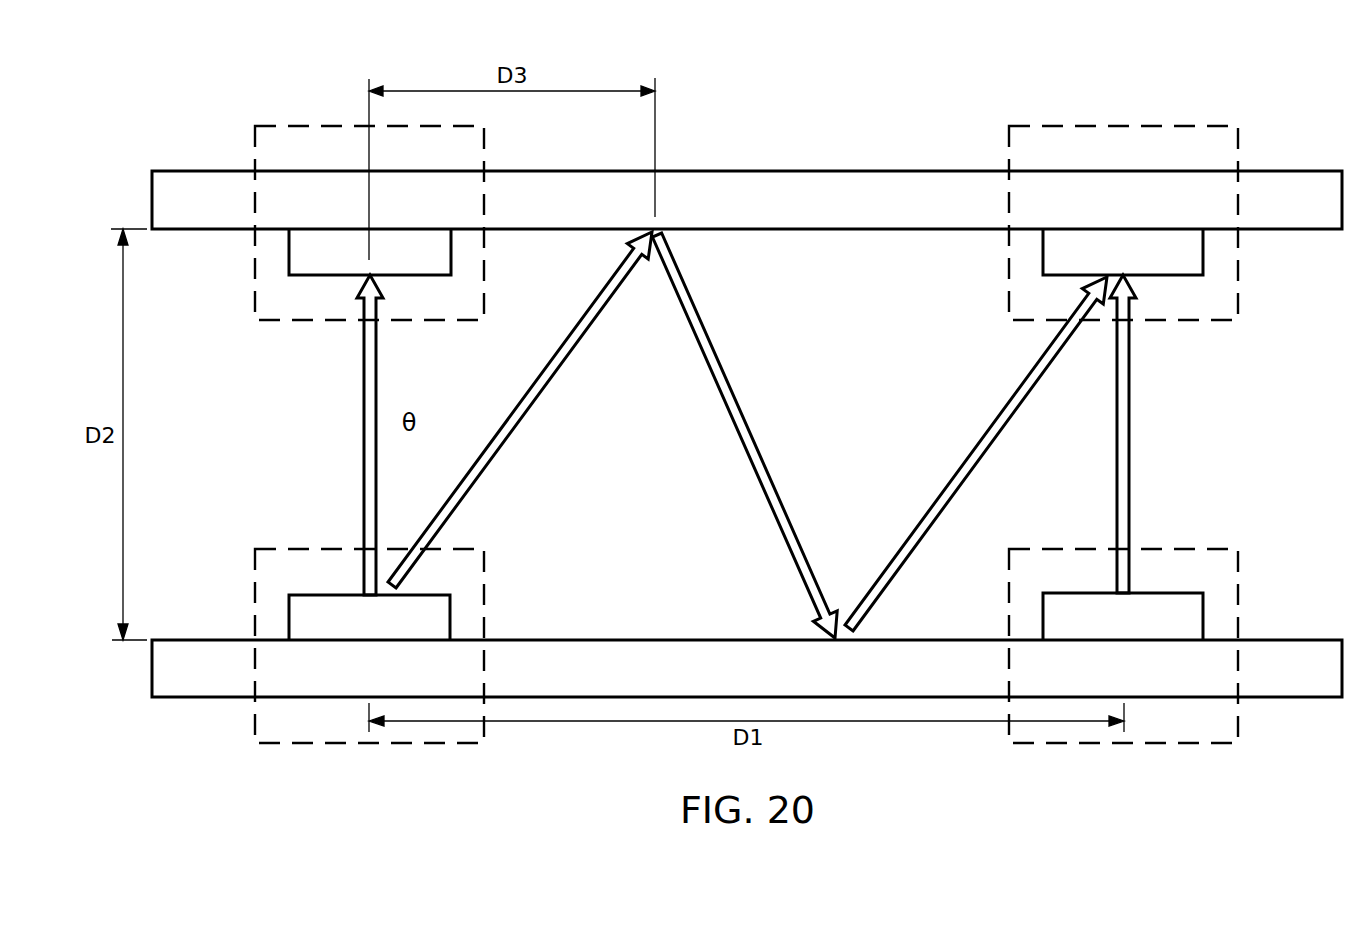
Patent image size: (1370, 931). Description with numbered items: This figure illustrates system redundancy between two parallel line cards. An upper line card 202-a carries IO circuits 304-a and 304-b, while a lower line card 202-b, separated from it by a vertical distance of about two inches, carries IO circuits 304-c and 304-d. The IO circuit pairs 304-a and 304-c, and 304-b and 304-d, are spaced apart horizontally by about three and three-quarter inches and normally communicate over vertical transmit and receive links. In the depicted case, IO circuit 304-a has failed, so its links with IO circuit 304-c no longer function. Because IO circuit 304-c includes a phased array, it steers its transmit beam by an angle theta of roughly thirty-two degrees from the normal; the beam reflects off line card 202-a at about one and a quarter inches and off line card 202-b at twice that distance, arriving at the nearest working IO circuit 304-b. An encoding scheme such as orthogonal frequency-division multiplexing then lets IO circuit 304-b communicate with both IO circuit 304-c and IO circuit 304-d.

The line card 202-a is at (940, 213).
The line card 202-b is at (840, 683).
The IO circuit 304-a is at (313, 124).
The IO circuit 304-b is at (1177, 124).
The IO circuit 304-c is at (317, 744).
The IO circuit 304-d is at (1175, 744).